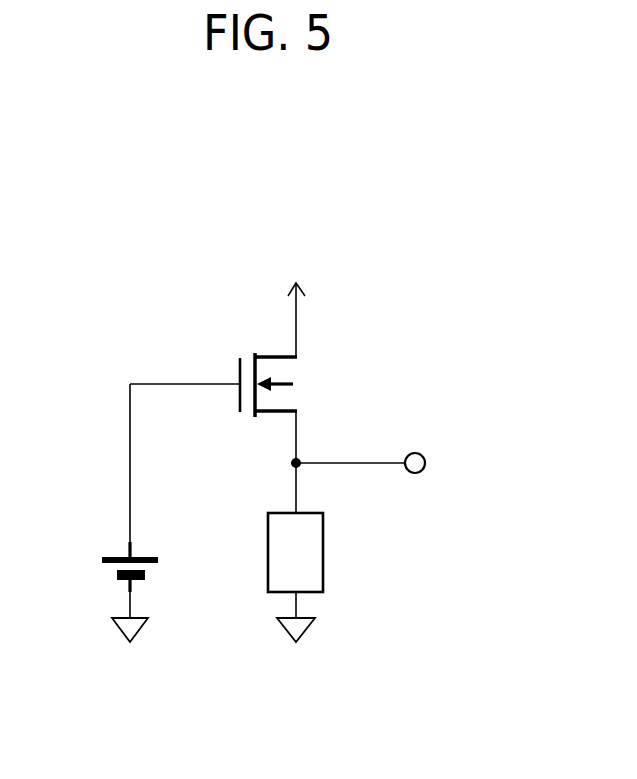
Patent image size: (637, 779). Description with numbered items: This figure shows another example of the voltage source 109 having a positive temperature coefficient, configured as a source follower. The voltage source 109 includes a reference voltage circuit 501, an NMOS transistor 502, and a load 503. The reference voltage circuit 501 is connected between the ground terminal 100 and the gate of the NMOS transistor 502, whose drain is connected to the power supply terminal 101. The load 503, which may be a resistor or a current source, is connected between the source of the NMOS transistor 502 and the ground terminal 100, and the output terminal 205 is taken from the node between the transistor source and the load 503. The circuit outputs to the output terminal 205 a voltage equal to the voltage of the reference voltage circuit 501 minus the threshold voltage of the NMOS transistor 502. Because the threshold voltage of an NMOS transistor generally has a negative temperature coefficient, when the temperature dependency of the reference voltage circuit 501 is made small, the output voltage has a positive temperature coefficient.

The voltage source 109 is at (265, 194).
The power supply terminal 101 is at (296, 300).
The NMOS transistor 502 is at (298, 383).
The reference voltage circuit 501 is at (118, 553).
The load 503 is at (267, 547).
The output terminal 205 is at (422, 478).
The ground terminal 100 is at (214, 648).